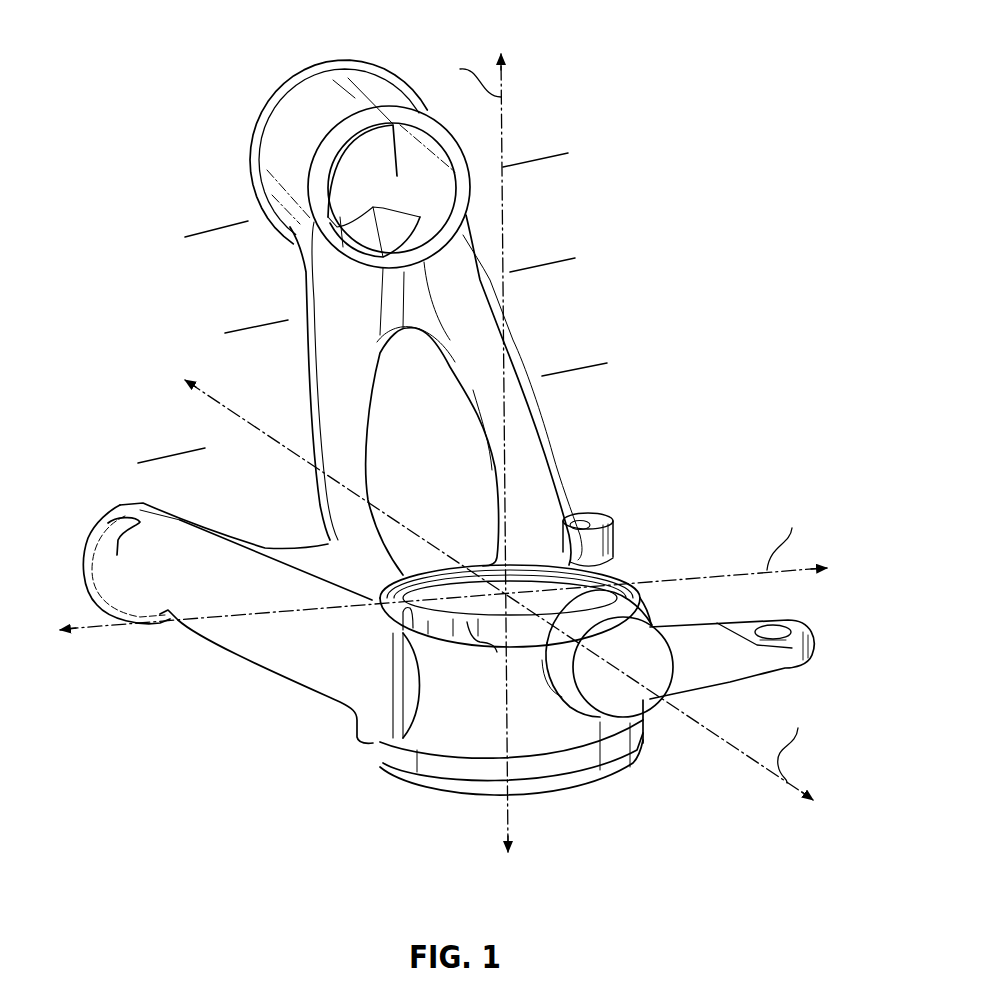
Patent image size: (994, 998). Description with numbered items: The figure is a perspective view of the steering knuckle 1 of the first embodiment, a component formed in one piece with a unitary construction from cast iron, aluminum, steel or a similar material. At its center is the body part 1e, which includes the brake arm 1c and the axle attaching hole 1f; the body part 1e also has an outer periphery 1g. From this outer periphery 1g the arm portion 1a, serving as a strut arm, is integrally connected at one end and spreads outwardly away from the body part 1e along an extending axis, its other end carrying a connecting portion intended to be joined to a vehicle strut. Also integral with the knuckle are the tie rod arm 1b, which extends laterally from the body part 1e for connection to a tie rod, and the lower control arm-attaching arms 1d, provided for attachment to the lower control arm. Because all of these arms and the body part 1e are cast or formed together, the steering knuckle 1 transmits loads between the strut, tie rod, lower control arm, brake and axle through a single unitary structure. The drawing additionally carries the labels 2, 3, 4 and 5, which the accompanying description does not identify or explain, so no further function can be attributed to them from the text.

The steering knuckle 1 is at (468, 455).
The arm portion 1a is at (291, 78).
The tie rod arm 1b is at (108, 535).
The brake arm 1c is at (618, 548).
The lower control arm-attaching arms 1d is at (620, 693).
The body part 1e is at (352, 840).
The axle attaching hole 1f is at (497, 652).
The outer periphery 1g is at (383, 743).
The coordinate axes X Y Z 2 is at (501, 78).
The first plane/level 3 is at (147, 456).
The second plane/level 4 is at (233, 326).
The third plane/level 5 is at (194, 228).